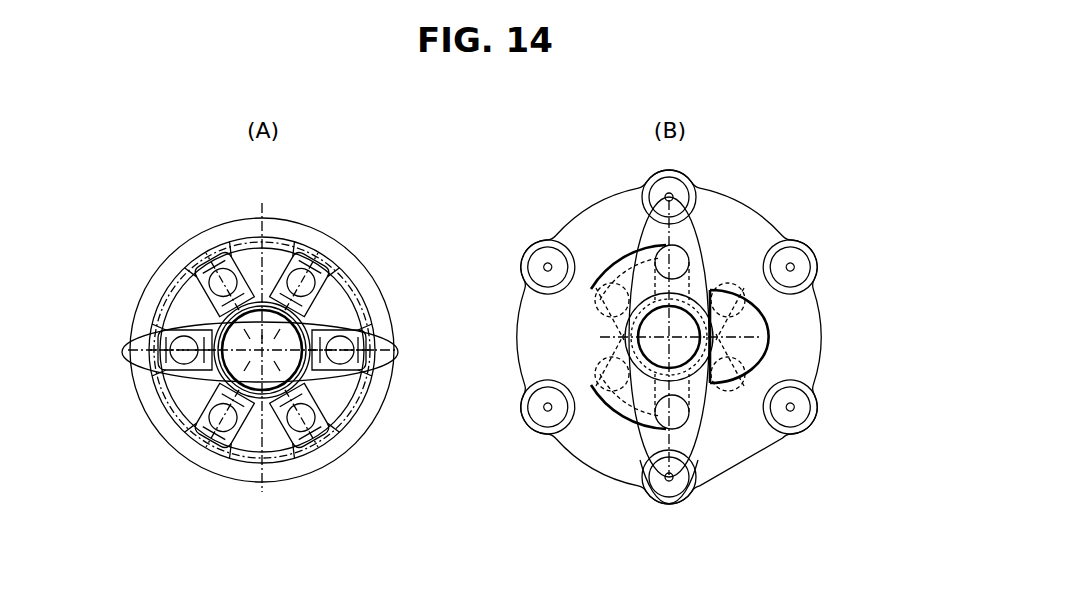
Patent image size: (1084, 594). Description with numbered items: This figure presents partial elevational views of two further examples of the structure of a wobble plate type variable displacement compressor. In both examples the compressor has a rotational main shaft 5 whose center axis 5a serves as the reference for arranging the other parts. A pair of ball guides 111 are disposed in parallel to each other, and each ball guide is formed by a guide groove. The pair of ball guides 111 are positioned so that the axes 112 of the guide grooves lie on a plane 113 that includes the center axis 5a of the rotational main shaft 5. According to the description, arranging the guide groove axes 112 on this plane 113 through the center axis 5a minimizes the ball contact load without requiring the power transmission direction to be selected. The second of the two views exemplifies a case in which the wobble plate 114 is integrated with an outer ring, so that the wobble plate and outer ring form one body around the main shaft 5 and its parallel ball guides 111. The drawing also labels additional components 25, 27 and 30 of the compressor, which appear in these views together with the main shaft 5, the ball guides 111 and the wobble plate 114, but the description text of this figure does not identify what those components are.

The rotational main shaft 5 is at (238, 363).
The center axis 5a is at (266, 360).
The retainer 25 is at (734, 308).
The carrier plate 27 is at (328, 385).
The housing 30 is at (335, 445).
The ball guides 111 is at (338, 322).
The axes of guide grooves 112 is at (292, 288).
The plane 113 is at (260, 483).
The wobble plate 114 is at (732, 427).